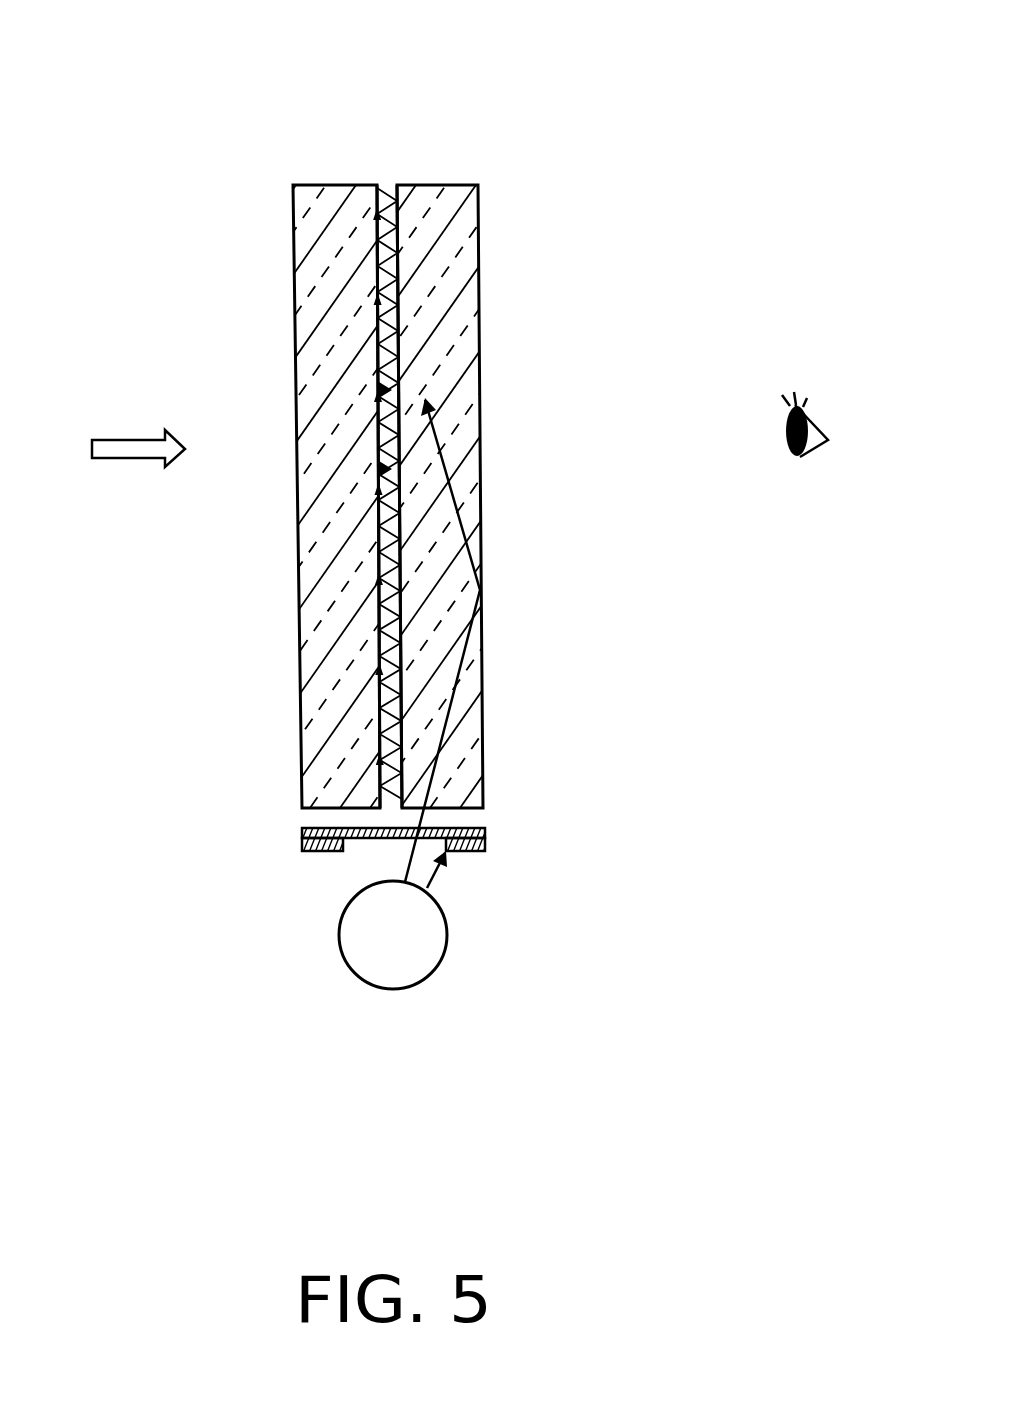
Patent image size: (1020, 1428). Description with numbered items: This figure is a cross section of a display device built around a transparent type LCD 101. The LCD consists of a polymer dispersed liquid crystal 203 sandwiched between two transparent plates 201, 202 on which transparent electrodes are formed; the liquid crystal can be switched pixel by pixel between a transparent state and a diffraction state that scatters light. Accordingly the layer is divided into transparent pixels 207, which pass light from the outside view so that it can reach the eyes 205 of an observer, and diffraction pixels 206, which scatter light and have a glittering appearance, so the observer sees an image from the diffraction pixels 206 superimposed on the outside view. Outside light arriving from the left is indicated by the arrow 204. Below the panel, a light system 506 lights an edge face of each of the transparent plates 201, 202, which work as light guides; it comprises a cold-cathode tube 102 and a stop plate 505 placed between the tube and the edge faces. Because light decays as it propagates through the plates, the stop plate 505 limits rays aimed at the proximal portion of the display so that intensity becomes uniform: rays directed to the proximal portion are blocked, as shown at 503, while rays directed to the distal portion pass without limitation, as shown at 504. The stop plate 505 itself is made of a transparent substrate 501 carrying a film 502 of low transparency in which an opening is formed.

The transparent type LCD 101 is at (486, 88).
The cold-cathode tube 102 is at (375, 975).
The transparent plate 201 is at (465, 275).
The transparent plate 202 is at (320, 256).
The polymer dispersed liquid crystal 203 is at (383, 185).
The external light direction 204 is at (137, 443).
The eyes 205 is at (820, 417).
The diffraction pixels 206 is at (380, 408).
The transparent pixels 207 is at (397, 325).
The transparent substrate 501 is at (318, 828).
The film 502 is at (320, 851).
The light rays not allowed to pass through the stop plate 503 is at (428, 888).
The light rays passing through the stop plate 504 is at (452, 492).
The stop plate 505 is at (166, 797).
The light system 506 is at (530, 823).